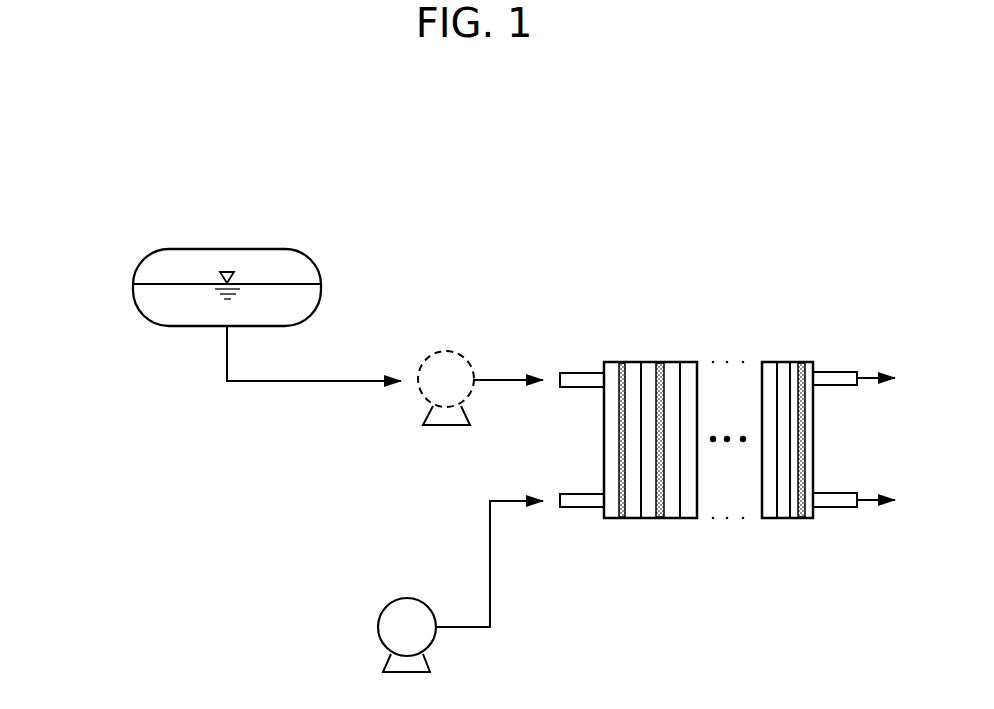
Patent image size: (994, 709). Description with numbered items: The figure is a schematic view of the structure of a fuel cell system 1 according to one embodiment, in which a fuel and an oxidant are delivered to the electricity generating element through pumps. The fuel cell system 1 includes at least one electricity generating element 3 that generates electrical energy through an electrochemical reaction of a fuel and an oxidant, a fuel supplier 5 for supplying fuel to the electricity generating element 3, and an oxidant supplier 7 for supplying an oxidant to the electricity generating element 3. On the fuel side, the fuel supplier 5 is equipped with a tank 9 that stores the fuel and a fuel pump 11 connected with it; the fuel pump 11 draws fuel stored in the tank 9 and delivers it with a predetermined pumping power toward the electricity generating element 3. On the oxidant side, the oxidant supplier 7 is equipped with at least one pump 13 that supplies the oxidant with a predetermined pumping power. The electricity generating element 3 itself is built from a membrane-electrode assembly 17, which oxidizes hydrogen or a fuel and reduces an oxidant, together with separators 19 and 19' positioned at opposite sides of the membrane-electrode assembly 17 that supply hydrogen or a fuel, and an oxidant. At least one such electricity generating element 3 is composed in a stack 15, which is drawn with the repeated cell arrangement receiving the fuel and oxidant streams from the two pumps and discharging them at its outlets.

The fuel cell system 1 is at (484, 140).
The electricity generating element 3 is at (605, 604).
The fuel supplier 5 is at (104, 286).
The oxidant supplier 7 is at (354, 615).
The tank 9 is at (236, 249).
The fuel pump 11 is at (434, 352).
The pump 13 is at (396, 600).
The stack 15 is at (770, 336).
The membrane-electrode assembly 17 is at (660, 520).
The separator 19 is at (622, 484).
The separator 19' is at (701, 484).